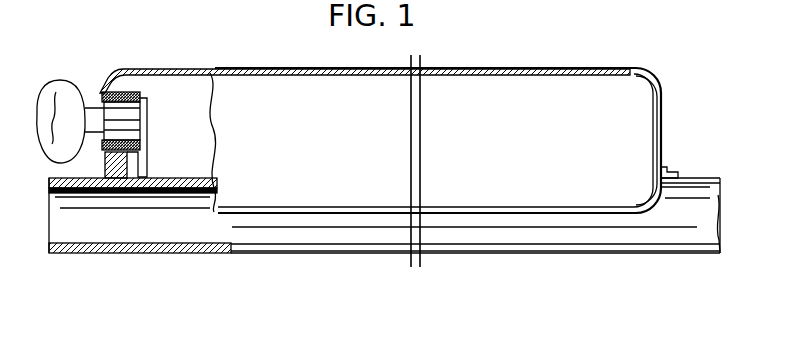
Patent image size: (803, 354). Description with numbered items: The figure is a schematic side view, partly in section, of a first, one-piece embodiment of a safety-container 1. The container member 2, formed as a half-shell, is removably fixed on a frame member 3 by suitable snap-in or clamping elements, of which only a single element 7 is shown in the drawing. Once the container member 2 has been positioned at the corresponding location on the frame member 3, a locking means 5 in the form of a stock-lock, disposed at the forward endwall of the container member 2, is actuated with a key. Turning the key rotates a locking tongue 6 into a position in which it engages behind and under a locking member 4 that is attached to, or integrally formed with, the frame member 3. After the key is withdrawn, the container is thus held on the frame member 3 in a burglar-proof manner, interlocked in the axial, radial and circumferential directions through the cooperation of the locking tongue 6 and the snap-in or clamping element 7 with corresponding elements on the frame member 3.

The safety-container 1 is at (551, 67).
The container member 2 is at (168, 72).
The frame member 3 is at (197, 250).
The locking member 4 is at (120, 180).
The locking means 5 is at (103, 92).
The locking tongue 6 is at (143, 112).
The snap-in or clamping element 7 is at (667, 168).